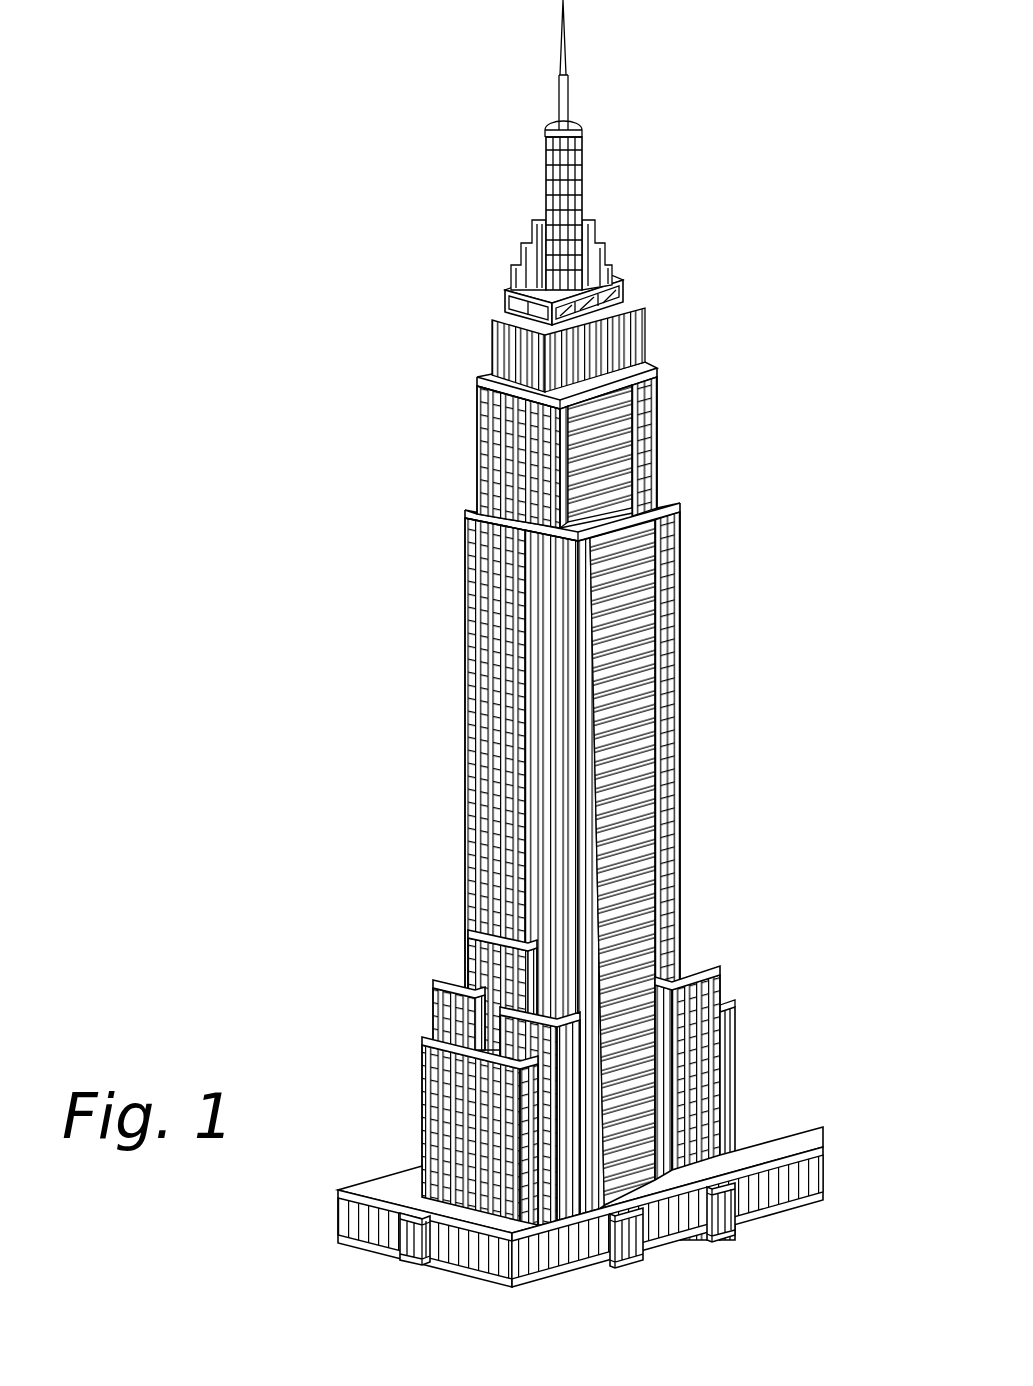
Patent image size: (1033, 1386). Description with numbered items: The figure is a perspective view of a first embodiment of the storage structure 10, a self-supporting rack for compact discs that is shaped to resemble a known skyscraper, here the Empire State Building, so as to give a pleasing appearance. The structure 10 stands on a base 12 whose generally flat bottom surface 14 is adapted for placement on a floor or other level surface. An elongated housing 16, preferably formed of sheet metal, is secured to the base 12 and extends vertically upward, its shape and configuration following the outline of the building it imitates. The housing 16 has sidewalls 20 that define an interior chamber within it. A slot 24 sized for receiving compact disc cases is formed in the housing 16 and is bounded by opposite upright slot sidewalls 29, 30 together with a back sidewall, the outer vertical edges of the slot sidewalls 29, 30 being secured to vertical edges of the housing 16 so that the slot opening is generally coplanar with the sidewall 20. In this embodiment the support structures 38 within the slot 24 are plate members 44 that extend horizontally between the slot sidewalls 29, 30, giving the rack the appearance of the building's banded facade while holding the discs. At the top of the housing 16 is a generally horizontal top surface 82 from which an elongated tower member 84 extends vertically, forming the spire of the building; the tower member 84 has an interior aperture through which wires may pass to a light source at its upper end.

The storage structure 10 is at (581, 645).
The base 12 is at (581, 1166).
The bottom surface 14 is at (660, 1250).
The housing 16 is at (572, 871).
The sidewalls 20 is at (495, 678).
The slot 24 is at (634, 431).
The slot sidewall 29 is at (574, 445).
The slot sidewall 30 is at (628, 405).
The support structures 38 is at (652, 492).
The plate members 44 is at (652, 646).
The top surface 82 is at (503, 314).
The tower members 84 is at (542, 165).